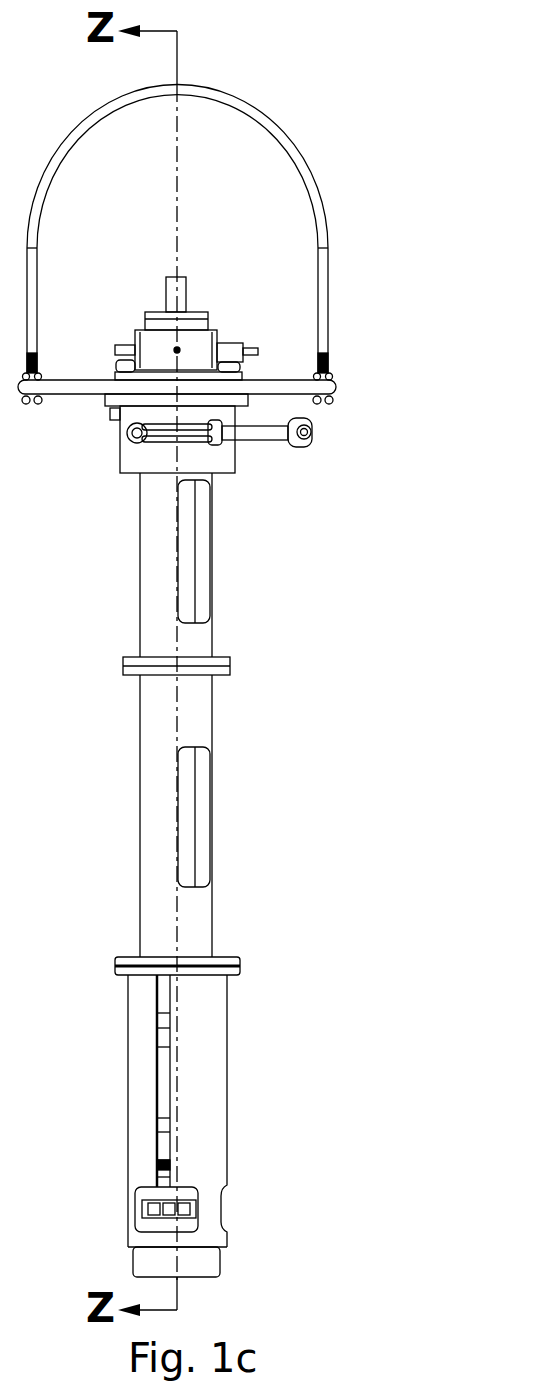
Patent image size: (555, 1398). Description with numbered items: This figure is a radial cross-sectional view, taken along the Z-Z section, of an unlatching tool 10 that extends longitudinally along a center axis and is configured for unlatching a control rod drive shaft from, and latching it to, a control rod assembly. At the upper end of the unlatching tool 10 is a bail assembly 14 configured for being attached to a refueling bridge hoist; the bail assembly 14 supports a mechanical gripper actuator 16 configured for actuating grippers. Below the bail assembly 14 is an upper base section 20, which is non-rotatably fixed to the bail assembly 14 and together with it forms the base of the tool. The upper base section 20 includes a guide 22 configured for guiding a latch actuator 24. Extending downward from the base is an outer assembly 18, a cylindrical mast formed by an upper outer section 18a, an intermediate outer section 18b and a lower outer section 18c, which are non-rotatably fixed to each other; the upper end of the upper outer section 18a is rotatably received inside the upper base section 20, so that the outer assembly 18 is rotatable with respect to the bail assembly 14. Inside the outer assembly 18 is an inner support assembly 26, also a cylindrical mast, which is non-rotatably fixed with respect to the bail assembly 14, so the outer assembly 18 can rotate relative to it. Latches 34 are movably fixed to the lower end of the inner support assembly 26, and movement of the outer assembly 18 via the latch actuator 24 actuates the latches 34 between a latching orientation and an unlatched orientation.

The unlatching tool 10 is at (370, 1267).
The bail assembly 14 is at (358, 210).
The mechanical gripper actuator 16 is at (228, 320).
The outer assembly 18 is at (180, 875).
The upper outer section 18a is at (160, 608).
The intermediate outer section 18b is at (157, 795).
The lower outer section 18c is at (135, 1050).
The upper base section 20 is at (246, 474).
The guide 22 is at (131, 448).
The latch actuator 24 is at (319, 446).
The inner support assembly 26 is at (204, 812).
The latches 34 is at (133, 1212).